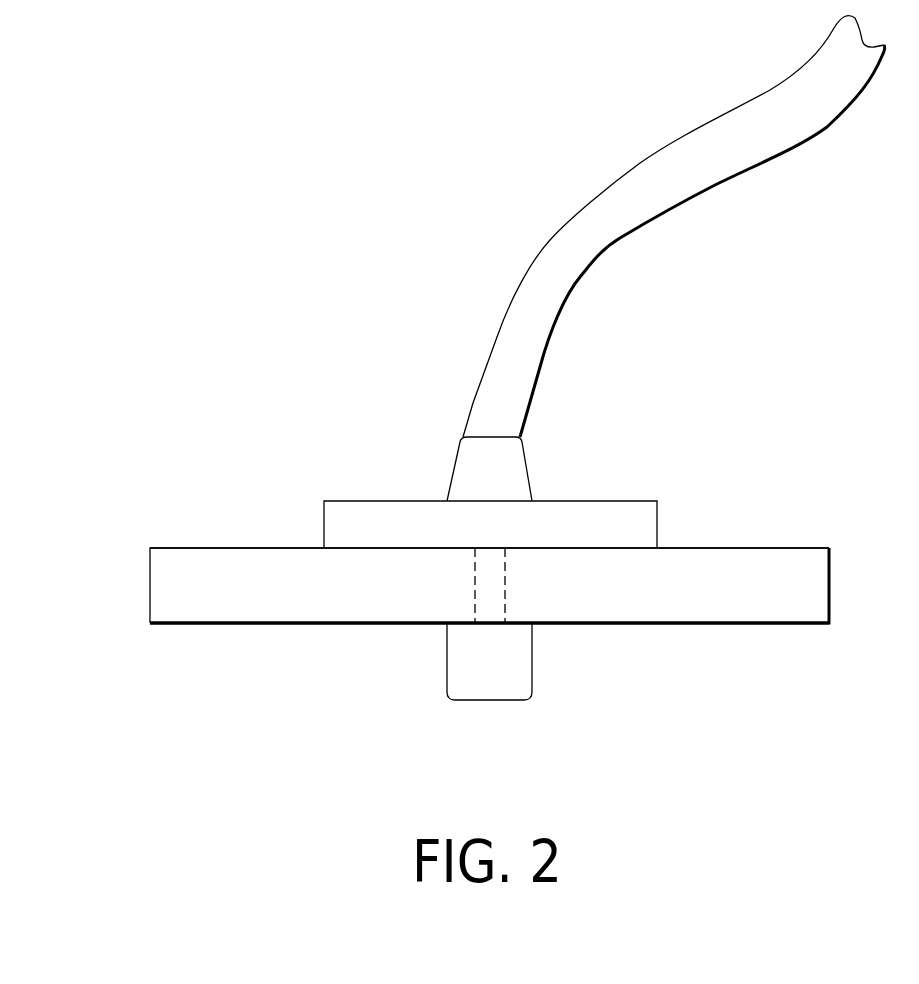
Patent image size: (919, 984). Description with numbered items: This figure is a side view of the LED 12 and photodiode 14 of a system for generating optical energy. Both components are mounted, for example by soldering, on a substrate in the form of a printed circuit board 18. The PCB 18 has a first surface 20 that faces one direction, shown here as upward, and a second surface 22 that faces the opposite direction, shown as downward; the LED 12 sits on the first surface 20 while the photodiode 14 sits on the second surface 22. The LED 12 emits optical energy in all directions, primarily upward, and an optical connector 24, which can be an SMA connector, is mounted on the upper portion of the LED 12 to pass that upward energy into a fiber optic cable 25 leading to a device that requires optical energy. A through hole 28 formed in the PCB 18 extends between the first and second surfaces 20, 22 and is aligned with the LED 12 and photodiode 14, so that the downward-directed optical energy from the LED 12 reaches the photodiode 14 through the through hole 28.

The LED 12 is at (634, 501).
The photodiode 14 is at (532, 670).
The printed circuit board 18 is at (800, 585).
The first surface 20 is at (749, 548).
The second surface 22 is at (692, 623).
The optical connector 24 is at (530, 468).
The fiber optic cable 25 is at (578, 207).
The through hole 28 is at (473, 588).